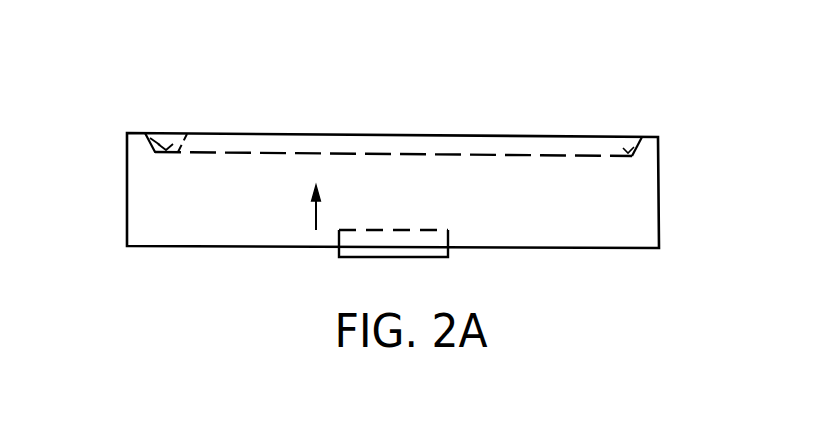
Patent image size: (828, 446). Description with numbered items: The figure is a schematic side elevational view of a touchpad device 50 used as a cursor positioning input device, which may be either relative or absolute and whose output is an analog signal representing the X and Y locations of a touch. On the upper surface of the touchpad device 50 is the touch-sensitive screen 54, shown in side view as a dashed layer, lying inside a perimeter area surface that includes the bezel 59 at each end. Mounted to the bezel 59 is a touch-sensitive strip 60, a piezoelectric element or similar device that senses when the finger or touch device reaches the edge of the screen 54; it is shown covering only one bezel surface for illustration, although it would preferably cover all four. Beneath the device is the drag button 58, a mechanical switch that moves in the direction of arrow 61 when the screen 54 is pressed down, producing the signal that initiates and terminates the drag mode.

The touchpad device 50 is at (402, 51).
The touch-sensitive screen 54 is at (462, 136).
The drag button 58 is at (396, 230).
The bezel 59 is at (628, 142).
The touch-sensitive strip 60 is at (178, 137).
The arrow 61 is at (312, 213).